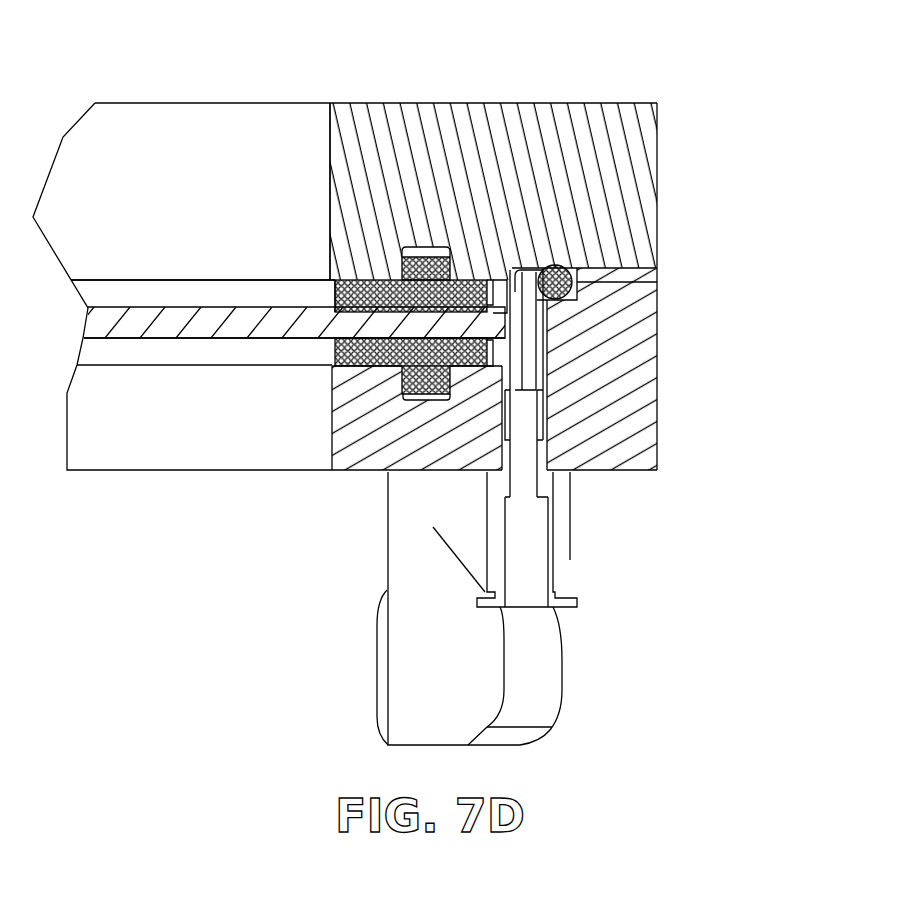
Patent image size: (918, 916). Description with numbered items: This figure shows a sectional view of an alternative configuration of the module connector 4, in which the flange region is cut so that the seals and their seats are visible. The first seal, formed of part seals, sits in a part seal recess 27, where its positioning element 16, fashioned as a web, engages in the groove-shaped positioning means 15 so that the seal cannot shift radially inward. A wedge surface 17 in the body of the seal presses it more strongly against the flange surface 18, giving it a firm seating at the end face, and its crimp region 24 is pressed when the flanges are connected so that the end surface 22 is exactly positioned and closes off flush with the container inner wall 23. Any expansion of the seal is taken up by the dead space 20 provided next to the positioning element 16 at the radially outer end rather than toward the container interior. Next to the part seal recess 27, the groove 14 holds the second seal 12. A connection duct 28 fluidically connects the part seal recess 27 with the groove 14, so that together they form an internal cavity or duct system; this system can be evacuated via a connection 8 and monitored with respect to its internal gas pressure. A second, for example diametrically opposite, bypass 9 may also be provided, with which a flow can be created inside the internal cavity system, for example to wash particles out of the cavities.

The module connector 4 is at (690, 249).
The connection 8 is at (571, 558).
The bypass 9 is at (542, 425).
The second seal 12 is at (660, 282).
The groove 14 is at (590, 290).
The positioning means 15 is at (355, 367).
The positioning element 16 is at (437, 249).
The wedge surface 17 is at (386, 278).
The flange surface 18 is at (343, 277).
The dead space 20 is at (436, 248).
The end surface 22 is at (336, 292).
The container inner wall 23 is at (330, 190).
The crimp region 24 is at (437, 401).
The part seal recess 27 is at (330, 353).
The connection duct 28 is at (504, 296).